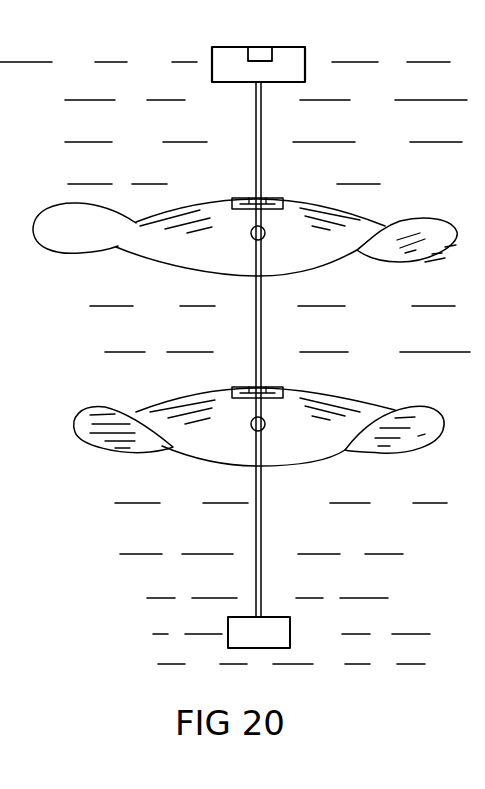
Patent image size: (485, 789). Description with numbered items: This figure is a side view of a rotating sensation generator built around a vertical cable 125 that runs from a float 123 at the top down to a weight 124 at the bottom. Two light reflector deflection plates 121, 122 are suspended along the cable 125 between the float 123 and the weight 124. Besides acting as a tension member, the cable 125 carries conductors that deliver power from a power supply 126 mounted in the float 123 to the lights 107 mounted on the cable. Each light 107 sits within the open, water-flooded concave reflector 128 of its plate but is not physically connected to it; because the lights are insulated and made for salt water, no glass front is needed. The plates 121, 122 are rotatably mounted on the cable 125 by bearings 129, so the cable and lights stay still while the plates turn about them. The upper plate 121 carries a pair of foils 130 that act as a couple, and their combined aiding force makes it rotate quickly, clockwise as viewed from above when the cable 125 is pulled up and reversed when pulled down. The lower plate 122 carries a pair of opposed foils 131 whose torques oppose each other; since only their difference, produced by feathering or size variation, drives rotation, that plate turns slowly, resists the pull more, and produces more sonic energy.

The light 107 is at (251, 236).
The light reflector deflection plate 121 is at (244, 233).
The light reflector deflection plate 122 is at (259, 432).
The float 123 is at (305, 67).
The weight 124 is at (292, 639).
The cable 125 is at (264, 176).
The power supply 126 is at (263, 47).
The concave reflector 128 is at (182, 265).
The bearing 129 is at (250, 198).
The foil 130 is at (52, 252).
The foil 131 is at (98, 454).